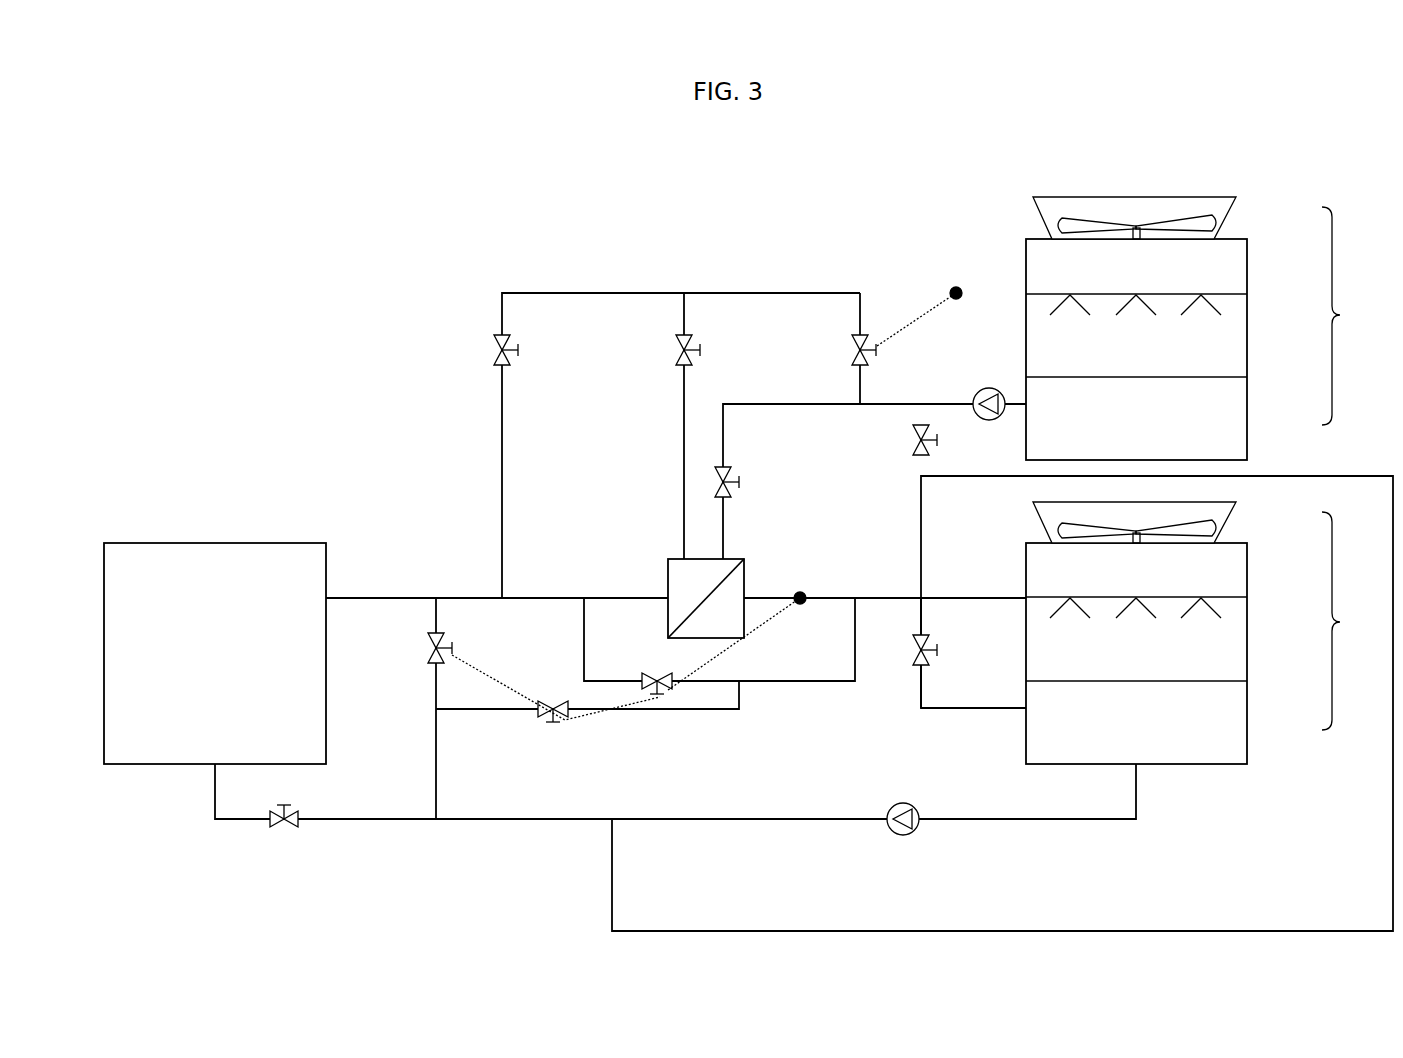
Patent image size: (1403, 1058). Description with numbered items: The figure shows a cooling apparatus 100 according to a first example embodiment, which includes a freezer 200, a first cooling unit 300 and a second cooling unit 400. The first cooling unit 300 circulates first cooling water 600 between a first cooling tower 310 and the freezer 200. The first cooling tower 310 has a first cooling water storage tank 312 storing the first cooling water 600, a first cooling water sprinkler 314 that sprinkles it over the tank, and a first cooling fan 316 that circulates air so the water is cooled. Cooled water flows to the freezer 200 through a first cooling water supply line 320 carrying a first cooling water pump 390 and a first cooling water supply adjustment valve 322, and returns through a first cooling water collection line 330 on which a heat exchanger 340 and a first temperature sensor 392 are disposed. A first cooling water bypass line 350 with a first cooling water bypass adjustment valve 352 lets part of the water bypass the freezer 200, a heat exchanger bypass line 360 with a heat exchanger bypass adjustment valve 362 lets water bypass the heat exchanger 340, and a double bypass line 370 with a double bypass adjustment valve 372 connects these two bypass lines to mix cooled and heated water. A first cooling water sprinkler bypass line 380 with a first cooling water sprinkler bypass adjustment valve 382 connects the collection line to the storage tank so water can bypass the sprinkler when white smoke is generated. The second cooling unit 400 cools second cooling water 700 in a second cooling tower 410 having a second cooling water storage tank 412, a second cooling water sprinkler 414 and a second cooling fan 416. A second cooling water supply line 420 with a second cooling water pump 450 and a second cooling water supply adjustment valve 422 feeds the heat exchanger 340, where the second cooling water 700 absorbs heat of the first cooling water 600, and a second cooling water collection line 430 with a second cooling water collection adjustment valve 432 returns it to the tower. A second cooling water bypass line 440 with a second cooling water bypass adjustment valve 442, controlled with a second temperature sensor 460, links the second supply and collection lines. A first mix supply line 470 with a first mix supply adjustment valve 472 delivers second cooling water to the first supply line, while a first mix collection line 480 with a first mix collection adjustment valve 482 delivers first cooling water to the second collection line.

The cooling apparatus 100 is at (397, 205).
The freezer 200 is at (267, 543).
The first cooling unit 300 is at (1238, 797).
The first cooling tower 310 is at (1207, 638).
The first cooling water storage tank 312 is at (1248, 722).
The first cooling water sprinkler 314 is at (1214, 597).
The first cooling fan 316 is at (1212, 528).
The first cooling water supply line 320 is at (468, 822).
The first cooling water supply adjustment valve 322 is at (289, 835).
The first cooling water collection line 330 is at (910, 598).
The heat exchanger 340 is at (668, 583).
The first cooling water bypass line 350 is at (436, 745).
The first cooling water bypass adjustment valve 352 is at (428, 648).
The heat exchanger bypass line 360 is at (800, 683).
The heat exchanger bypass adjustment valve 362 is at (650, 672).
The double bypass line 370 is at (665, 712).
The double bypass adjustment valve 372 is at (548, 700).
The first cooling water sprinkler bypass line 380 is at (968, 710).
The first cooling water sprinkler bypass adjustment valve 382 is at (937, 650).
The first cooling water pump 390 is at (905, 836).
The first temperature sensor 392 is at (802, 590).
The second cooling unit 400 is at (948, 212).
The second cooling tower 410 is at (1207, 333).
The second cooling water storage tank 412 is at (1248, 415).
The second cooling water sprinkler 414 is at (1214, 294).
The second cooling fan 416 is at (1212, 225).
The second cooling water supply line 420 is at (865, 408).
The second cooling water supply adjustment valve 422 is at (739, 482).
The second cooling water collection line 430 is at (780, 293).
The second cooling water collection adjustment valve 432 is at (700, 350).
The second cooling water bypass line 440 is at (862, 387).
The second cooling water bypass adjustment valve 442 is at (878, 352).
The second cooling water pump 450 is at (990, 388).
The second temperature sensor 460 is at (956, 290).
The first mix supply line 470 is at (1075, 931).
The first mix supply adjustment valve 472 is at (933, 440).
The first mix collection line 480 is at (606, 293).
The first mix collection adjustment valve 482 is at (518, 350).
The first cooling water 600 is at (1156, 736).
The second cooling water 700 is at (1156, 431).